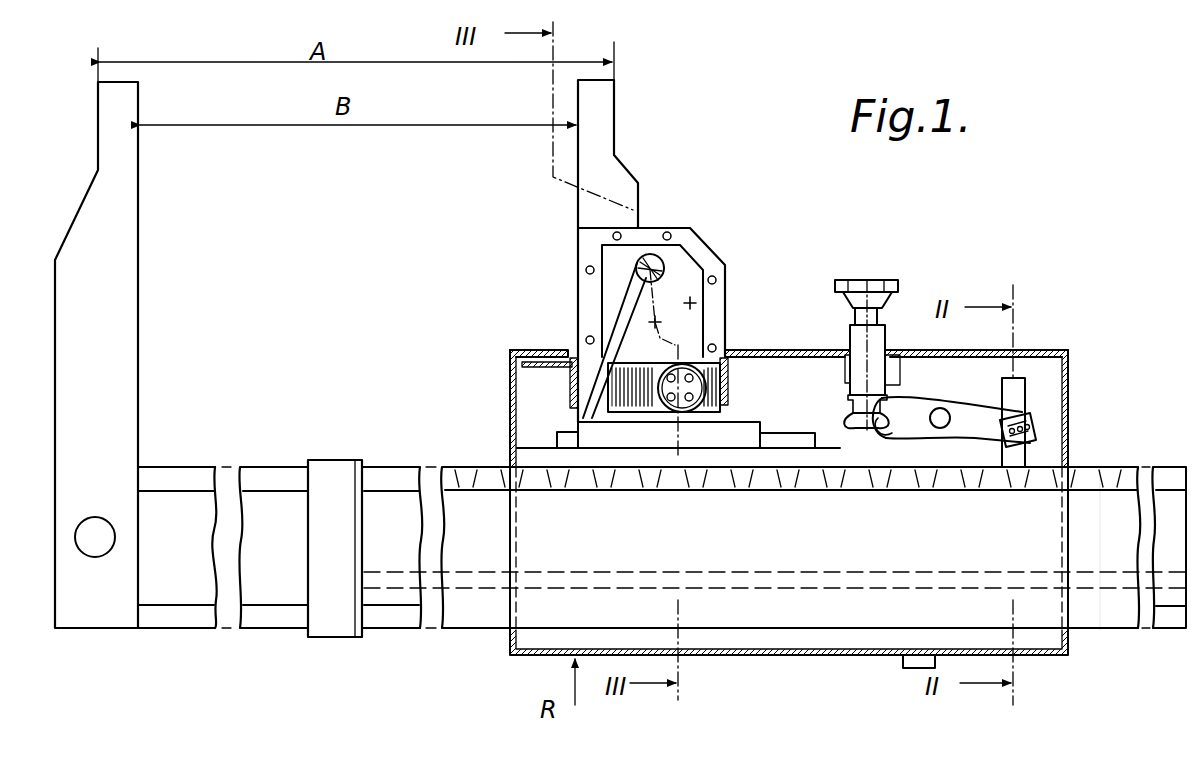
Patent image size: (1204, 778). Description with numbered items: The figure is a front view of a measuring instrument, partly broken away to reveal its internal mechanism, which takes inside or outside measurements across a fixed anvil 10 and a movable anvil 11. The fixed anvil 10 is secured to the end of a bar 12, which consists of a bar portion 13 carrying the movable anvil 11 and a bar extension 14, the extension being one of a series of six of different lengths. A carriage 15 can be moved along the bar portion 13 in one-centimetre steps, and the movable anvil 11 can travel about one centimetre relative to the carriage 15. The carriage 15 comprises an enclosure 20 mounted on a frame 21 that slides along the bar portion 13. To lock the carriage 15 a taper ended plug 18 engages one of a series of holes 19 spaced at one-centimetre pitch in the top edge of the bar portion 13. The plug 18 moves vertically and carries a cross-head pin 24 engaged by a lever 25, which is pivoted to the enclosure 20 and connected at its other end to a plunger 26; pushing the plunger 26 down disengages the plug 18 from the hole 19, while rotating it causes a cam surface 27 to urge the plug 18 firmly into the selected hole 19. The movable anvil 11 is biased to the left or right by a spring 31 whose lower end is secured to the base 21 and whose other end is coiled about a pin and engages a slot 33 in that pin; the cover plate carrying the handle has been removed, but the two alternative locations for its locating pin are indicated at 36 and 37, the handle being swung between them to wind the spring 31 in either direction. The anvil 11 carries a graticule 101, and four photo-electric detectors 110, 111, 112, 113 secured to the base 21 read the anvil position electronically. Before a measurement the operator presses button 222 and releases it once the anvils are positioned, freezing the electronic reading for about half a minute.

The fixed anvil 10 is at (112, 111).
The movable anvil 11 is at (600, 113).
The bar 12 is at (397, 458).
The bar portion 13 is at (415, 622).
The bar extension 14 is at (195, 622).
The carriage 15 is at (1074, 364).
The taper ended plug 18 is at (1012, 456).
The holes 19 is at (1102, 465).
The enclosure 20 is at (1047, 351).
The frame 21 is at (533, 458).
The cross-head pin 24 is at (1032, 425).
The lever 25 is at (912, 408).
The plunger 26 is at (862, 280).
The cam surface 27 is at (892, 426).
The spring 31 is at (622, 286).
The slot 33 is at (665, 260).
The locating pin position 36 is at (661, 325).
The locating pin position 37 is at (694, 303).
The graticule 101 is at (628, 367).
The photo-electric detector 110 is at (700, 385).
The photo-electric detector 111 is at (712, 398).
The photo-electric detector 112 is at (674, 412).
The photo-electric detector 113 is at (690, 365).
The button 222 is at (912, 668).